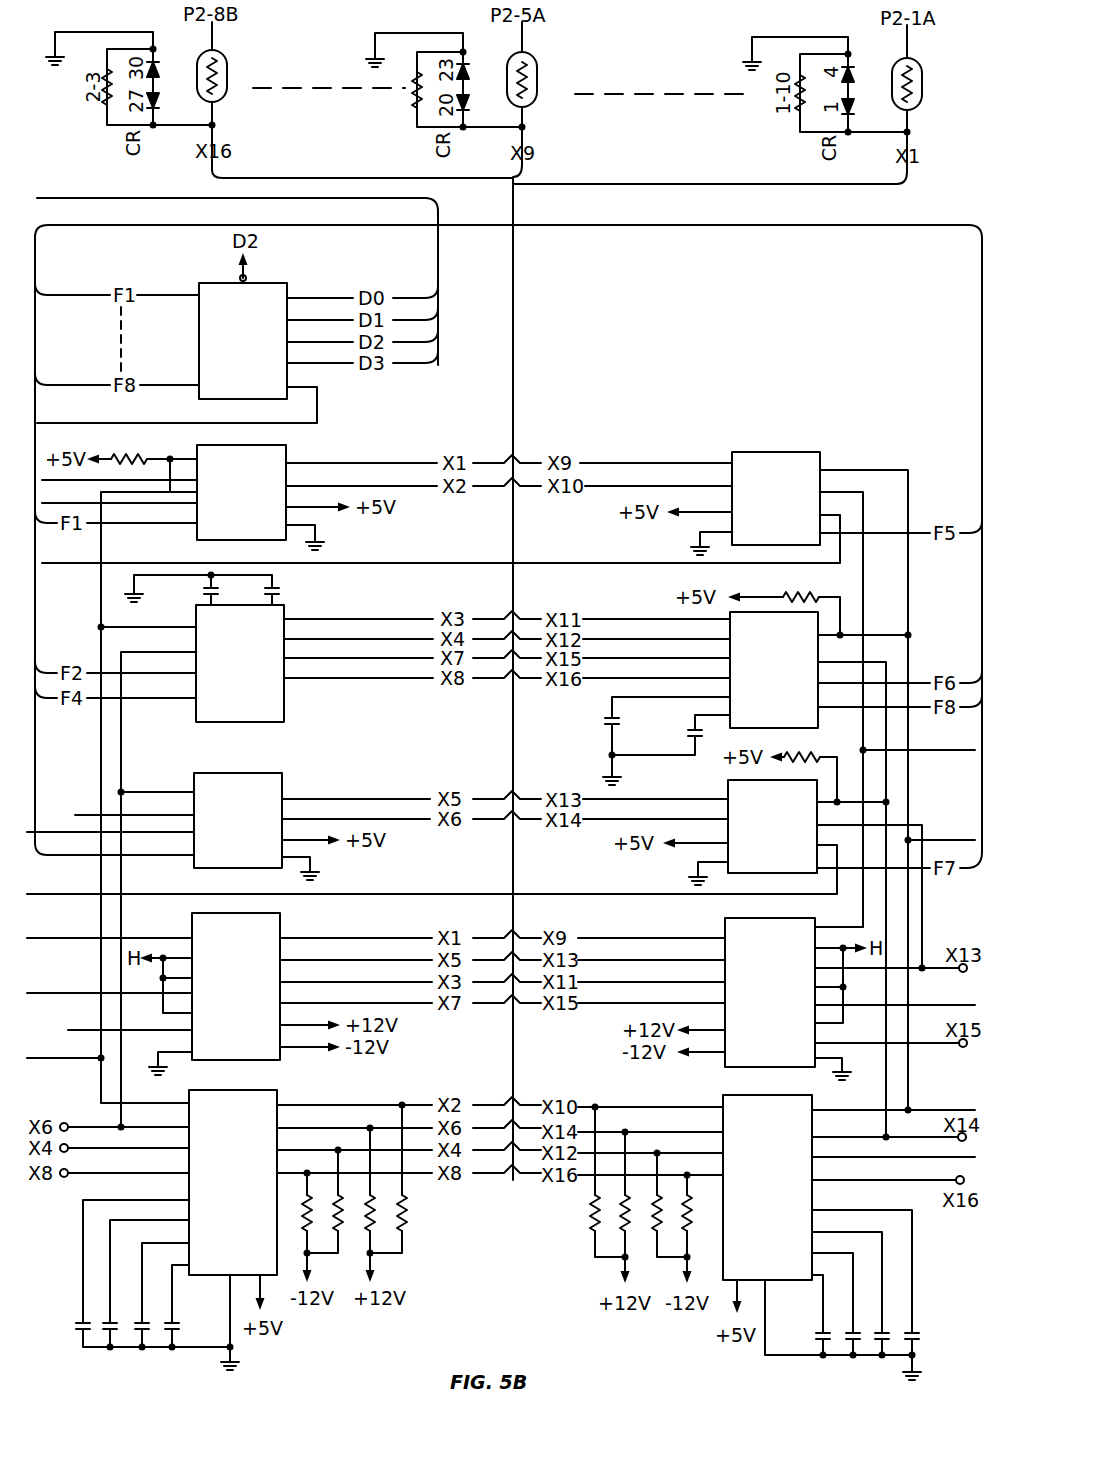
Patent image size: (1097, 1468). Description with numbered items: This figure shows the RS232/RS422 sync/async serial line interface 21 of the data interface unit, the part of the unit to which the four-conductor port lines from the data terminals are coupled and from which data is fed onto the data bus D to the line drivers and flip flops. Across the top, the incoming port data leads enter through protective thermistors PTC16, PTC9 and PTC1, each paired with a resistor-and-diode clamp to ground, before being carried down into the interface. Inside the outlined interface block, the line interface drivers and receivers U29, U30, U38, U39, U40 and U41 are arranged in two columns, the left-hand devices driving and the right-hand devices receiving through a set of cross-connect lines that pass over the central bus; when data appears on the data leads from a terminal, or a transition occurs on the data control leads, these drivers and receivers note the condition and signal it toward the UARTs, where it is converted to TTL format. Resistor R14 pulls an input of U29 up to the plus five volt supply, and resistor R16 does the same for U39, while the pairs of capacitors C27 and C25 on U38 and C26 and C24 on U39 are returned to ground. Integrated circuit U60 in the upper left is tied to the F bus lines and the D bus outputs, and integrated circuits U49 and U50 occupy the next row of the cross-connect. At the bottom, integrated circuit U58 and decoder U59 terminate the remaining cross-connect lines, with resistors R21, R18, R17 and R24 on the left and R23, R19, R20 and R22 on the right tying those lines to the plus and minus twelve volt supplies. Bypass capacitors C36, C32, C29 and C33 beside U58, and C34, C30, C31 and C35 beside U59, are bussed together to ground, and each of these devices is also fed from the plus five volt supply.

The RS232/RS422 line interface 21 is at (708, 334).
The integrated circuit U60 is at (243, 341).
The line interface driver/receiver U29 is at (241, 492).
The line interface driver/receiver U30 is at (776, 498).
The line interface driver/receiver U38 is at (240, 663).
The line interface driver/receiver U39 is at (774, 670).
The line interface driver/receiver U40 is at (238, 820).
The line interface driver/receiver U41 is at (772, 826).
The integrated circuit U49 is at (236, 986).
The integrated circuit U50 is at (770, 992).
The integrated circuit U58 is at (233, 1182).
The decoder U59 is at (767, 1187).
The resistor R14 is at (134, 447).
The resistor R16 is at (790, 602).
The resistor R17 is at (359, 1190).
The resistor R18 is at (325, 1201).
The resistor R19 is at (614, 1194).
The resistor R20 is at (658, 1205).
The resistor R21 is at (295, 1213).
The resistor R22 is at (676, 1216).
The resistor R23 is at (596, 1182).
The resistor R24 is at (388, 1179).
The capacitor C24 is at (672, 737).
The capacitor C25 is at (292, 591).
The capacitor C26 is at (589, 720).
The capacitor C27 is at (189, 591).
The capacitor C29 is at (134, 1302).
The capacitor C30 is at (844, 1312).
The capacitor C31 is at (874, 1312).
The capacitor C32 is at (102, 1302).
The capacitor C33 is at (164, 1302).
The capacitor C34 is at (814, 1312).
The capacitor C35 is at (904, 1312).
The capacitor C36 is at (74, 1302).
The positive temperature coefficient thermistor PTC1 is at (919, 84).
The positive temperature coefficient thermistor PTC9 is at (534, 79).
The positive temperature coefficient thermistor PTC16 is at (224, 80).